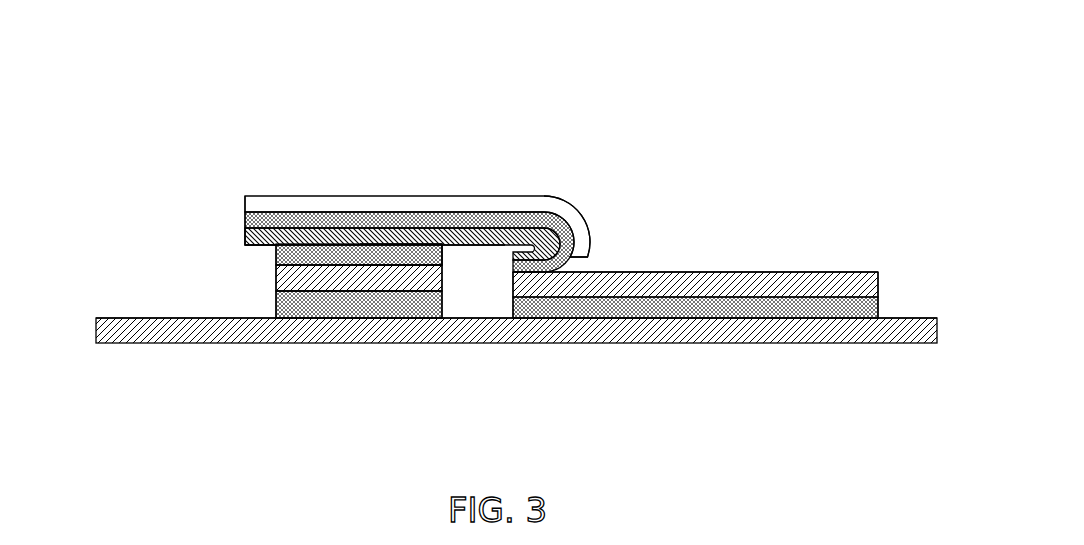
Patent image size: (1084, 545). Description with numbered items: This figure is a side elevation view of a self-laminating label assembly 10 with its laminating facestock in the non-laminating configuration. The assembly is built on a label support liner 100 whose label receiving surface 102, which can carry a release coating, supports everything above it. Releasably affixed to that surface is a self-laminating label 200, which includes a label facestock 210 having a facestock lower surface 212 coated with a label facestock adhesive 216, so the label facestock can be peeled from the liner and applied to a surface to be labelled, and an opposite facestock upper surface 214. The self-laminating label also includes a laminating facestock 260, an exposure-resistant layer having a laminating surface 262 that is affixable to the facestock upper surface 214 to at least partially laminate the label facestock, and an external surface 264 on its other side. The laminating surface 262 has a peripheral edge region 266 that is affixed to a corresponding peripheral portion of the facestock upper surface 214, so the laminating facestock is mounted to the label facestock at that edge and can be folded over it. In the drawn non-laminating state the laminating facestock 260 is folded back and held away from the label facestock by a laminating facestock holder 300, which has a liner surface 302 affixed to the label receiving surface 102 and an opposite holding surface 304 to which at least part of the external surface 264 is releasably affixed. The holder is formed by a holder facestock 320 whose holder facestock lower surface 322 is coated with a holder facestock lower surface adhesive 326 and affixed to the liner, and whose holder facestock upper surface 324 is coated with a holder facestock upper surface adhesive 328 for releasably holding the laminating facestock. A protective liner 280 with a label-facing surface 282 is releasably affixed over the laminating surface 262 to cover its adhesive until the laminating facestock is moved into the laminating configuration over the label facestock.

The self-laminating label assembly 10 is at (683, 109).
The label support liner 100 is at (857, 332).
The label receiving surface 102 is at (788, 318).
The self-laminating label 200 is at (729, 174).
The label facestock 210 is at (865, 285).
The facestock lower surface 212 is at (866, 300).
The facestock upper surface 214 is at (820, 273).
The label facestock adhesive 216 is at (735, 305).
The laminating facestock 260 is at (383, 102).
The laminating surface 262 is at (493, 230).
The external surface 264 is at (252, 246).
The peripheral edge region 266 is at (552, 225).
The protective liner 280 is at (272, 212).
The label-facing surface 282 is at (573, 232).
The laminating facestock holder 300 is at (141, 263).
The liner surface 302 is at (333, 318).
The holding surface 304 is at (312, 245).
The holder facestock 320 is at (297, 280).
The holder facestock lower surface 322 is at (398, 292).
The holder facestock upper surface 324 is at (365, 265).
The holder facestock lower surface adhesive 326 is at (300, 303).
The holder facestock upper surface adhesive 328 is at (410, 257).